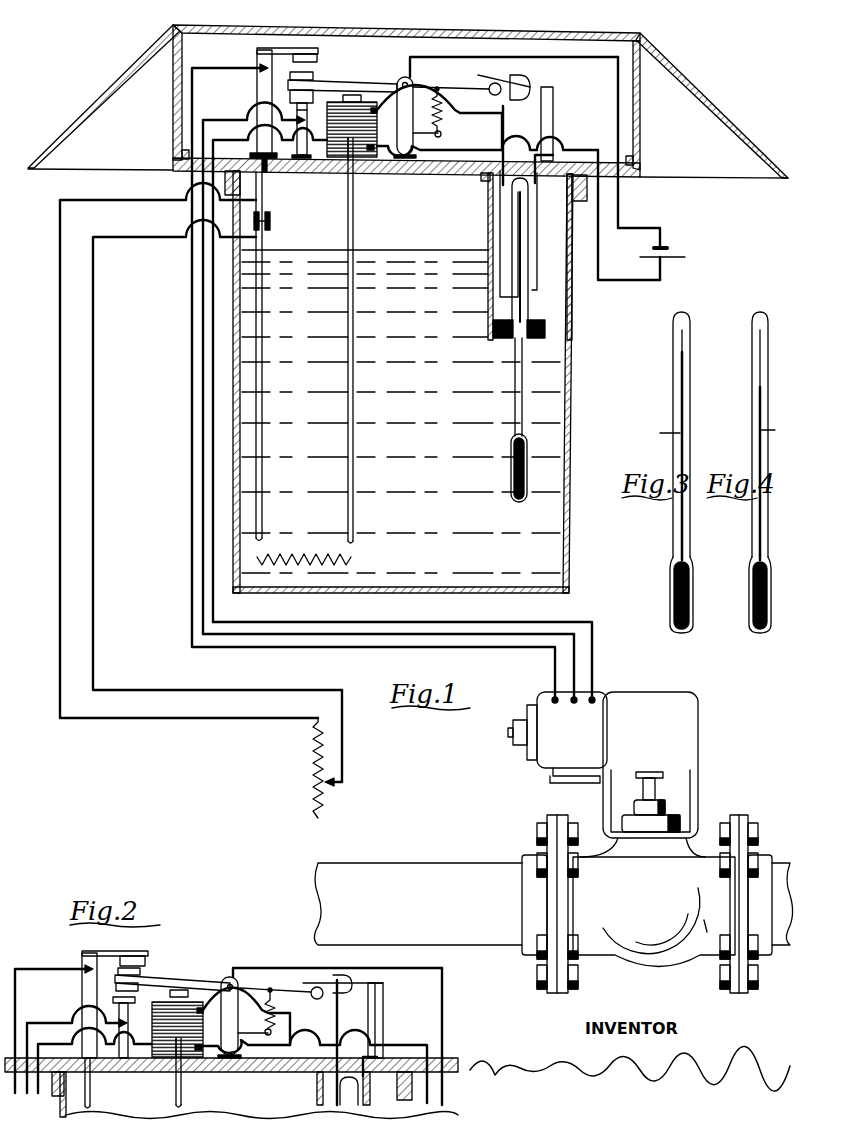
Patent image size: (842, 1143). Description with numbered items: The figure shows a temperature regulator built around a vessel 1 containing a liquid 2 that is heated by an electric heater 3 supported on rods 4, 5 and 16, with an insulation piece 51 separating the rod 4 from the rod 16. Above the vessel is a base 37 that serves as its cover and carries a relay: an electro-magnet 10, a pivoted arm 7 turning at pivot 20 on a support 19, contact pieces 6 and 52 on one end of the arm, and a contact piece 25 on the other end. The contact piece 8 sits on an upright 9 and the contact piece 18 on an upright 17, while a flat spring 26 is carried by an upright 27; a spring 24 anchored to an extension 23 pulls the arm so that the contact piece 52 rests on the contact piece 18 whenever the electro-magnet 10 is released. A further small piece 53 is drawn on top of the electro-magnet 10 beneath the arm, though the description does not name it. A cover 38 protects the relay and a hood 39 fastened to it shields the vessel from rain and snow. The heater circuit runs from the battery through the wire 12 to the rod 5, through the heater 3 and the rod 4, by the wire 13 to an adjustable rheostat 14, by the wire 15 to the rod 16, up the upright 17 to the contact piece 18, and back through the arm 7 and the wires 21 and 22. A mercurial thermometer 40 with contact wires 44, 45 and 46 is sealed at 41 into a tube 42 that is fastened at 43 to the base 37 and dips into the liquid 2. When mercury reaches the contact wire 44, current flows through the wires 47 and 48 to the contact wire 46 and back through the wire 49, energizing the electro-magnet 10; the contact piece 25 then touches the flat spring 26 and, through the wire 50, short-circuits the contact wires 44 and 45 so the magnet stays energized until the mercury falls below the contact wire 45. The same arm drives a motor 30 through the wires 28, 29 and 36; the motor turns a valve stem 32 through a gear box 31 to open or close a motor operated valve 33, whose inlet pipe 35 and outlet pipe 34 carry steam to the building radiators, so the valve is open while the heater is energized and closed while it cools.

In FIG. 1, the vessel 1 is at (571, 420).
In FIG. 2, the vessel 1 is at (58, 1102).
In FIG. 1, the liquid 2 is at (405, 252).
In FIG. 1, the electric heater 3 is at (294, 564).
In FIG. 1, the rod 4 is at (262, 446).
In FIG. 1, the rod 5 is at (355, 229).
In FIG. 2, the rod 5 is at (176, 1082).
In FIG. 1, the contact piece 6 is at (290, 92).
In FIG. 2, the contact piece 6 is at (116, 988).
In FIG. 1, the arm 7 is at (395, 82).
In FIG. 2, the arm 7 is at (190, 972).
In FIG. 1, the contact piece 8 is at (309, 118).
In FIG. 2, the contact piece 8 is at (113, 1000).
In FIG. 1, the upright 9 is at (297, 108).
In FIG. 2, the upright 9 is at (128, 1019).
In FIG. 1, the electro-magnet 10 is at (363, 129).
In FIG. 2, the electro-magnet 10 is at (185, 1029).
In FIG. 1, the wire 12 is at (638, 284).
In FIG. 2, the wire 12 is at (314, 1046).
In FIG. 1, the wire 13 is at (163, 241).
In FIG. 1, the adjustable rheostat 14 is at (312, 788).
In FIG. 1, the wire 15 is at (153, 200).
In FIG. 1, the rod 16 is at (265, 191).
In FIG. 2, the rod 16 is at (91, 1083).
In FIG. 1, the upright 17 is at (257, 100).
In FIG. 2, the upright 17 is at (82, 997).
In FIG. 1, the contact piece 18 is at (318, 52).
In FIG. 2, the contact piece 18 is at (148, 953).
In FIG. 1, the support 19 is at (416, 117).
In FIG. 2, the support 19 is at (243, 1017).
In FIG. 1, the pivot 20 is at (410, 84).
In FIG. 2, the pivot 20 is at (233, 985).
In FIG. 1, the wire 21 is at (468, 58).
In FIG. 2, the wire 21 is at (288, 966).
In FIG. 1, the wire 22 is at (580, 59).
In FIG. 2, the wire 22 is at (441, 1036).
In FIG. 1, the extension 23 is at (442, 136).
In FIG. 2, the extension 23 is at (258, 1021).
In FIG. 1, the spring 24 is at (445, 114).
In FIG. 2, the spring 24 is at (274, 1020).
In FIG. 1, the contact piece 25 is at (492, 94).
In FIG. 2, the contact piece 25 is at (312, 997).
In FIG. 1, the flat spring 26 is at (507, 80).
In FIG. 2, the flat spring 26 is at (340, 980).
In FIG. 1, the upright 27 is at (553, 108).
In FIG. 2, the upright 27 is at (384, 1013).
In FIG. 1, the wire 28 is at (611, 660).
In FIG. 2, the wire 28 is at (60, 1043).
In FIG. 1, the wire 29 is at (216, 126).
In FIG. 2, the wire 29 is at (75, 1048).
In FIG. 1, the motor 30 is at (557, 737).
In FIG. 1, the gear box 31 is at (642, 774).
In FIG. 1, the valve stem 32 is at (655, 790).
In FIG. 1, the motor operated valve 33 is at (654, 912).
In FIG. 1, the pipe 34 is at (784, 946).
In FIG. 1, the pipe 35 is at (420, 870).
In FIG. 1, the wire 36 is at (225, 67).
In FIG. 2, the wire 36 is at (45, 969).
In FIG. 1, the base 37 is at (402, 174).
In FIG. 2, the base 37 is at (225, 1075).
In FIG. 1, the cover 38 is at (173, 108).
In FIG. 1, the hood 39 is at (108, 92).
In FIG. 1, the mercurial thermometer 40 is at (511, 441).
In FIG. 3, the mercurial thermometer 40 is at (671, 555).
In FIG. 4, the mercurial thermometer 40 is at (751, 555).
In FIG. 1, the seal 41 is at (494, 340).
In FIG. 1, the tube 42 is at (493, 208).
In FIG. 2, the tube 42 is at (316, 1090).
In FIG. 1, the fastening point 43 is at (482, 178).
In FIG. 1, the contact wire 44 is at (522, 222).
In FIG. 3, the contact wire 44 is at (683, 352).
In FIG. 4, the contact wire 44 is at (762, 352).
In FIG. 1, the contact wire 45 is at (530, 250).
In FIG. 3, the contact wire 45 is at (682, 379).
In FIG. 4, the contact wire 45 is at (760, 379).
In FIG. 1, the contact wire 46 is at (505, 252).
In FIG. 3, the contact wire 46 is at (668, 432).
In FIG. 4, the contact wire 46 is at (770, 432).
In FIG. 1, the wire 47 is at (384, 162).
In FIG. 2, the wire 47 is at (208, 1062).
In FIG. 1, the wire 48 is at (392, 105).
In FIG. 2, the wire 48 is at (334, 1020).
In FIG. 1, the wire 49 is at (510, 126).
In FIG. 2, the wire 49 is at (346, 1008).
In FIG. 1, the wire 50 is at (537, 190).
In FIG. 2, the wire 50 is at (362, 1057).
In FIG. 1, the insulation piece 51 is at (270, 222).
In FIG. 1, the contact piece 52 is at (313, 76).
In FIG. 2, the contact piece 52 is at (150, 965).
In FIG. 1, the contact piece 53 is at (343, 99).
In FIG. 2, the contact piece 53 is at (170, 993).